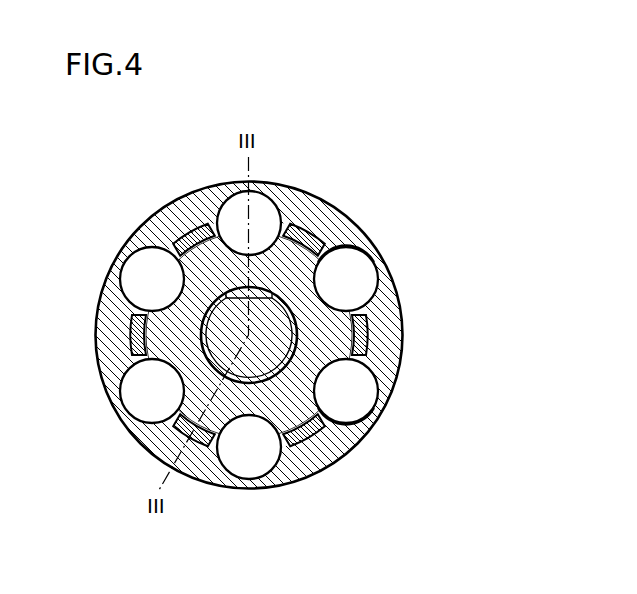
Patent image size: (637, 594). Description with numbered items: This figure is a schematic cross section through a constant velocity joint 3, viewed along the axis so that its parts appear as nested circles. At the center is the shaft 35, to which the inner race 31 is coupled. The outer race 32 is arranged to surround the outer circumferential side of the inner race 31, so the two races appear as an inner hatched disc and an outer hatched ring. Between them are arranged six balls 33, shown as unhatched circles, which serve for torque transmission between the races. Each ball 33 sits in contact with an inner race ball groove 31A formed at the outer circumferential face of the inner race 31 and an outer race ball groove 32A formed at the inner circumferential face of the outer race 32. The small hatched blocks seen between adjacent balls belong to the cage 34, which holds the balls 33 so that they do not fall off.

The constant velocity joint 3 is at (386, 162).
The inner race 31 is at (292, 267).
The inner race ball groove 31A is at (328, 375).
The outer race 32 is at (177, 215).
The outer race ball groove 32A is at (355, 258).
The ball 33 is at (235, 213).
The cage 34 is at (283, 418).
The shaft 35 is at (270, 333).